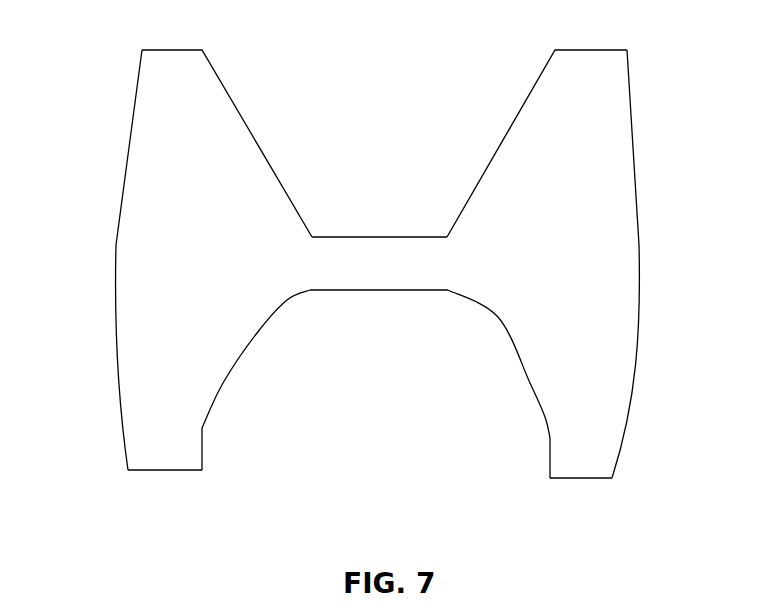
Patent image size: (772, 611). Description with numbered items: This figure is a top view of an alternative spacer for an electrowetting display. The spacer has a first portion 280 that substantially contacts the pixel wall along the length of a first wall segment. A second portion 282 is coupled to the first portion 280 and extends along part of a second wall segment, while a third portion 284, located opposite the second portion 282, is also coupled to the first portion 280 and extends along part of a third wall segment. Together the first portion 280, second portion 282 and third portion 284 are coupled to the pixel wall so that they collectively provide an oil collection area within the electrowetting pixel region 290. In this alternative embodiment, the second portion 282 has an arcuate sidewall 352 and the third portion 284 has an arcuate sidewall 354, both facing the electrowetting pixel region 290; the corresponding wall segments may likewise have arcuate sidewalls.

The first portion 280 is at (383, 237).
The second portion 282 is at (632, 253).
The third portion 284 is at (118, 365).
The electrowetting pixel region 290 is at (377, 404).
The arcuate sidewall 352 is at (548, 438).
The arcuate sidewall 354 is at (204, 428).